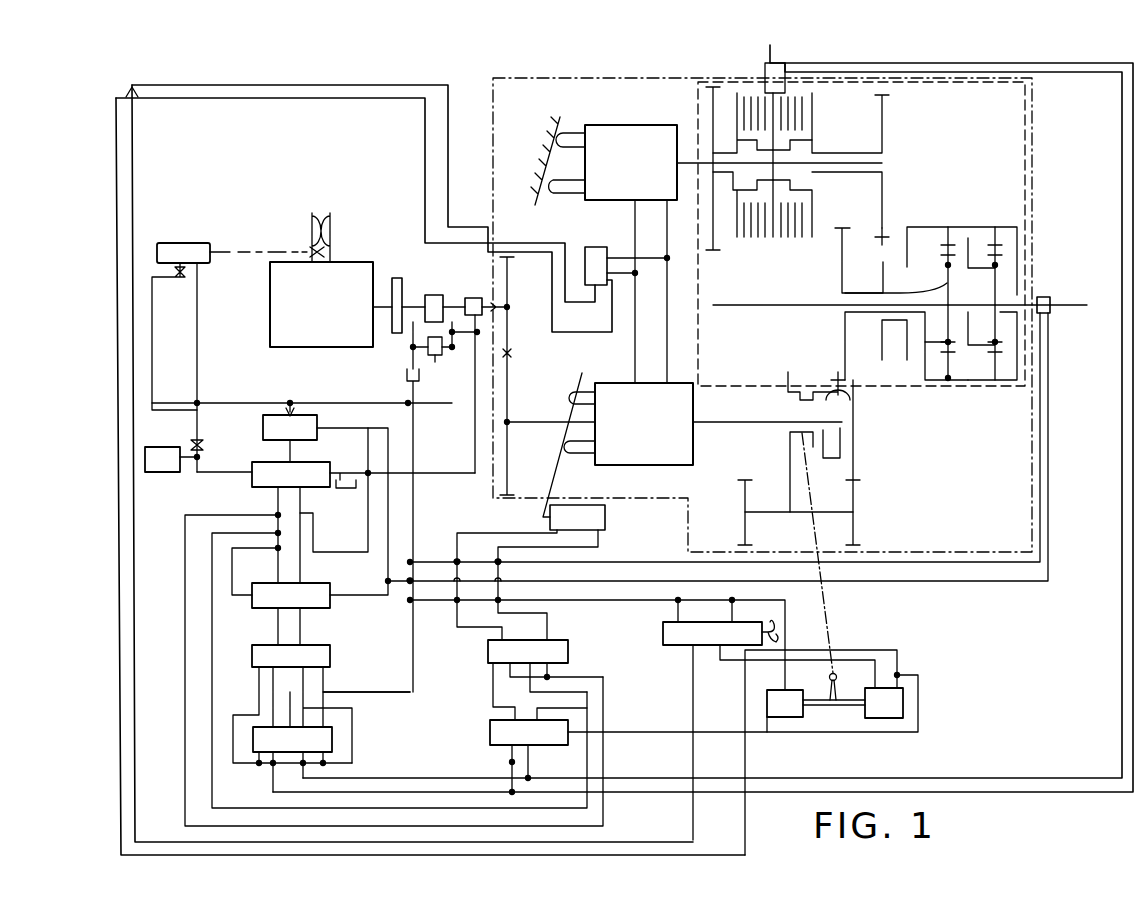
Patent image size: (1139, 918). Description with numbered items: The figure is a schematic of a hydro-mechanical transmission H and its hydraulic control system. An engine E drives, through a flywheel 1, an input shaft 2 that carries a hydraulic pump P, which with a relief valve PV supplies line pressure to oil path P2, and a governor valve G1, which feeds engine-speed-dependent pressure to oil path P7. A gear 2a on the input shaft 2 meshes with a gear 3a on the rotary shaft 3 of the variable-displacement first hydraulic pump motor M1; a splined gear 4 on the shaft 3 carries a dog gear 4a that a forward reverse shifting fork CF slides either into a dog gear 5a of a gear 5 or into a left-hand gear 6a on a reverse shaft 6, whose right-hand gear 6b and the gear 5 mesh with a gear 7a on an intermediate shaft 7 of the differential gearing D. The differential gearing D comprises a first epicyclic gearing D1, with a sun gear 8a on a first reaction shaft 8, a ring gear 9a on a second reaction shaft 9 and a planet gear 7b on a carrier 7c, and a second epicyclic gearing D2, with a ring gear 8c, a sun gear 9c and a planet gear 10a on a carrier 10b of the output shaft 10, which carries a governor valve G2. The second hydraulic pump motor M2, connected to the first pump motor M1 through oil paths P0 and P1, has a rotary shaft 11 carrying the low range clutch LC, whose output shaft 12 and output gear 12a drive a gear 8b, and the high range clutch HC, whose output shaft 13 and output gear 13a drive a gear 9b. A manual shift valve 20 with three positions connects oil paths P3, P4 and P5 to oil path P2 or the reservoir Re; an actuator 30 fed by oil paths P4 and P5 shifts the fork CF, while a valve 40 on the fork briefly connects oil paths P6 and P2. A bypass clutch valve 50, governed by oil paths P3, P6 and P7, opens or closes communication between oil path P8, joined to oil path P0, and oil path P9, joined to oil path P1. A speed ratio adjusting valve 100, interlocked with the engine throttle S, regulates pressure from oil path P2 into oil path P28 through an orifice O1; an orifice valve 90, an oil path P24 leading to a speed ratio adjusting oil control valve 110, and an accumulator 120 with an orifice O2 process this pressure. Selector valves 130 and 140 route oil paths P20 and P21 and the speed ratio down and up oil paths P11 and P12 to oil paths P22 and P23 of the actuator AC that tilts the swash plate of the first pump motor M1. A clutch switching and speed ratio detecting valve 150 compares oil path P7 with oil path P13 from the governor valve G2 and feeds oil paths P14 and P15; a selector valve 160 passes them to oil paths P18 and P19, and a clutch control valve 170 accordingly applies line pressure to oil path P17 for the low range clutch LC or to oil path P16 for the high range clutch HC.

The engine E is at (321, 304).
The engine throttle S is at (330, 252).
The flywheel 1 is at (395, 278).
The input shaft 2 is at (414, 305).
The gear 2a is at (512, 353).
The rotary shaft 3 is at (532, 422).
The gear 3a is at (514, 357).
The gear 4 is at (790, 478).
The dog gear 4a is at (848, 398).
The gear 5 is at (850, 455).
The dog gear 5a is at (830, 458).
The reverse shaft 6 is at (777, 512).
The left-hand gear 6a is at (745, 528).
The right-hand gear 6b is at (856, 482).
The intermediate shaft 7 is at (858, 312).
The gear 7a is at (838, 372).
The planet gear 7b is at (948, 345).
The carrier 7c is at (948, 260).
The first reaction shaft 8 is at (785, 305).
The sun gear 8a is at (845, 293).
The gear 8b is at (713, 250).
The ring gear 8c is at (995, 380).
The second reaction shaft 9 is at (894, 340).
The ring gear 9a is at (950, 380).
The gear 9b is at (865, 248).
The sun gear 9c is at (1000, 340).
The output shaft 10 is at (1065, 305).
The planet gear 10a is at (1000, 258).
The carrier 10b is at (1002, 352).
The rotary shaft 11 is at (882, 153).
The output shaft 12 is at (733, 184).
The output gear 12a is at (722, 250).
The output shaft 13 is at (845, 172).
The output gear 13a is at (885, 240).
The manual shift valve 20 is at (597, 644).
The actuator 30 is at (884, 703).
The valve 40 is at (803, 712).
The bypass clutch valve 50 is at (598, 247).
The orifice valve 90 is at (290, 438).
The speed ratio adjusting valve 100 is at (183, 253).
The speed ratio adjusting oil control valve 110 is at (363, 475).
The accumulator 120 is at (172, 459).
The selector valve 130 is at (529, 757).
The selector valve 140 is at (545, 680).
The clutch switching and speed ratio detecting valve 150 is at (281, 577).
The selector valve 160 is at (291, 656).
The clutch control valve 170 is at (292, 759).
The first hydraulic pump motor M1 is at (618, 445).
The second hydraulic pump motor M2 is at (706, 161).
The hydraulic pump P is at (434, 308).
The governor valve G1 is at (473, 298).
The governor valve G2 is at (1047, 297).
The hydro-mechanical transmission H is at (493, 130).
The differential gearing D is at (930, 386).
The first epicyclic gearing D1 is at (948, 227).
The second epicyclic gearing D2 is at (995, 227).
The high range clutch HC is at (805, 117).
The low range clutch LC is at (748, 130).
The actuator AC is at (530, 572).
The forward reverse shifting fork CF is at (830, 566).
The reservoir Re is at (407, 380).
The relief valve PV is at (438, 362).
The orifice O1 is at (178, 275).
The orifice O2 is at (205, 445).
The oil path P0 is at (636, 327).
The oil path P1 is at (667, 315).
The oil path P2 is at (197, 292).
The oil path P3 is at (550, 243).
The oil path P4 is at (720, 662).
The oil path P5 is at (632, 732).
The oil path P6 is at (565, 302).
The oil path P7 is at (152, 277).
The oil path P8 is at (635, 273).
The oil path P9 is at (667, 258).
The speed ratio down oil path P11 is at (300, 500).
The speed ratio up oil path P12 is at (278, 500).
The oil path P13 is at (388, 428).
The oil path P14 is at (300, 630).
The oil path P15 is at (278, 628).
The oil path P16 is at (770, 63).
The oil path P17 is at (808, 63).
The oil path P18 is at (330, 708).
The oil path P19 is at (259, 673).
The oil path P20 is at (493, 690).
The oil path P21 is at (587, 708).
The oil path P22 is at (457, 627).
The oil path P23 is at (547, 625).
The signal line P24 is at (312, 452).
The oil path P28 is at (197, 350).